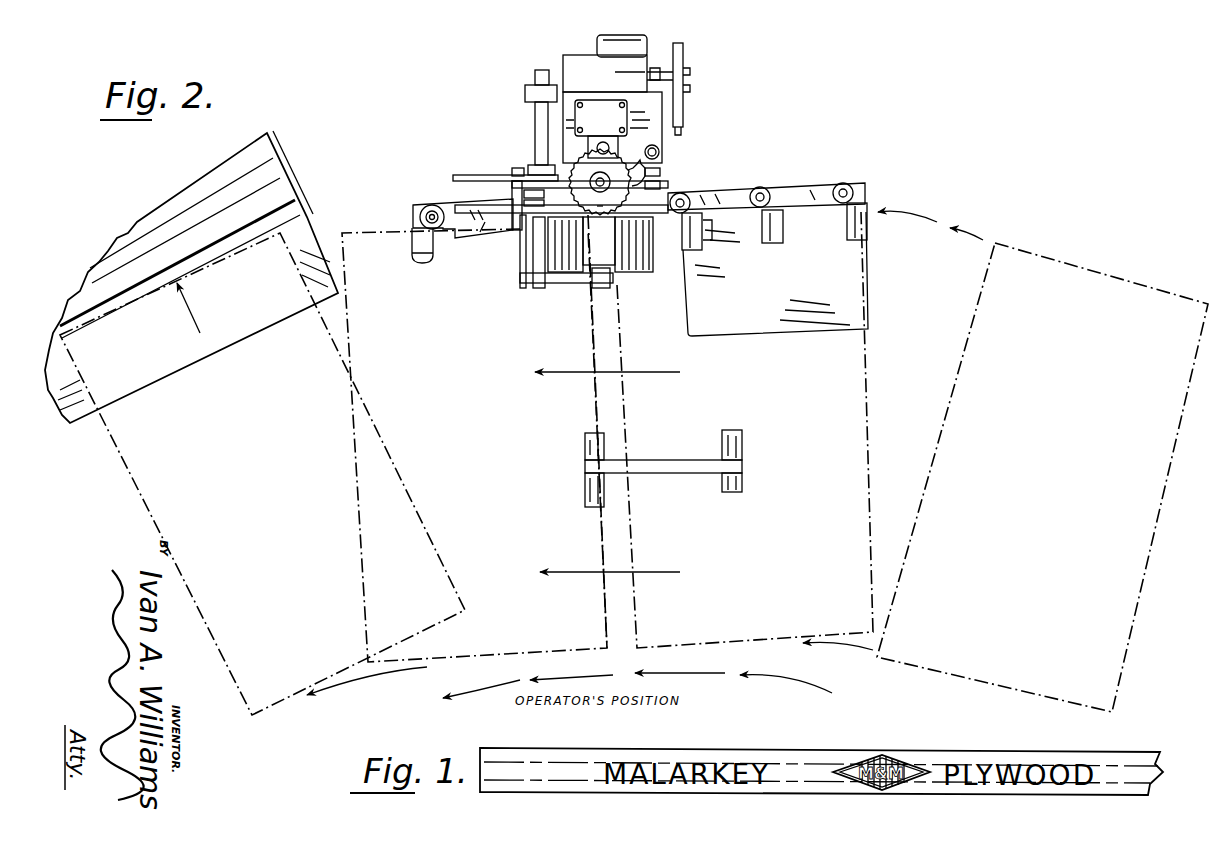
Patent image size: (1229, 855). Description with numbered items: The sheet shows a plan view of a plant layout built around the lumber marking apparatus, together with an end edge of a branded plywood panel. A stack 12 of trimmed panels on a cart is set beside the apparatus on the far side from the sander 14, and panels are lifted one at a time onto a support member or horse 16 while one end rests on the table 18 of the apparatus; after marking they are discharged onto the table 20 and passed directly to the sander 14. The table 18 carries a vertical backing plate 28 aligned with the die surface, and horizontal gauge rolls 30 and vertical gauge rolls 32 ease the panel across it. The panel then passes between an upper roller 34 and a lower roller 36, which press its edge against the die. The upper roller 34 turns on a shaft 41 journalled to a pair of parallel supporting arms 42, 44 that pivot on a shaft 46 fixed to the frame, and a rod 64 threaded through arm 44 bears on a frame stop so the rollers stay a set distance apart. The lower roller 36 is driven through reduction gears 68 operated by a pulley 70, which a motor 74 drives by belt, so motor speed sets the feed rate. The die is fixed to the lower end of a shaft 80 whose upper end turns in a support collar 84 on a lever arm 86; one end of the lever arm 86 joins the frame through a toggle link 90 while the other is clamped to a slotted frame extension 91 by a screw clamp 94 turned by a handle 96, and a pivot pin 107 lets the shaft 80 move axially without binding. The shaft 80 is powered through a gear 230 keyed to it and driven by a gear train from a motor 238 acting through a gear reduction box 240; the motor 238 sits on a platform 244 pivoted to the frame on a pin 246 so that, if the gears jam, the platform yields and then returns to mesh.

The stack of panels 12 is at (1037, 252).
The sander 14 is at (280, 197).
The support member or horse 16 is at (655, 460).
The table 18 is at (870, 292).
The table 20 is at (472, 232).
The vertical backing plate 28 is at (805, 187).
The horizontal gauge rolls 30 is at (682, 235).
The vertical gauge rolls 32 is at (690, 200).
The upper roller 34 is at (618, 262).
The lower roller 36 is at (653, 270).
The shaft 41 is at (601, 288).
The supporting arm 42 is at (563, 283).
The supporting arm 44 is at (583, 220).
The shaft 46 is at (535, 131).
The rod 64 is at (682, 230).
The reduction gears 68 is at (568, 62).
The pulley 70 is at (683, 117).
The motor 74 is at (650, 52).
The shaft 80 is at (627, 179).
The support collar 84 is at (600, 182).
The lever arm 86 is at (490, 176).
The toggle link 90 is at (660, 180).
The extension 91 is at (513, 168).
The screw clamp 94 is at (512, 193).
The handle 96 is at (536, 226).
The pivot pin 107 is at (600, 206).
The gear 230 is at (662, 163).
The motor 238 is at (585, 108).
The gear reduction box 240 is at (601, 118).
The platform 244 is at (655, 138).
The pin 246 is at (660, 153).